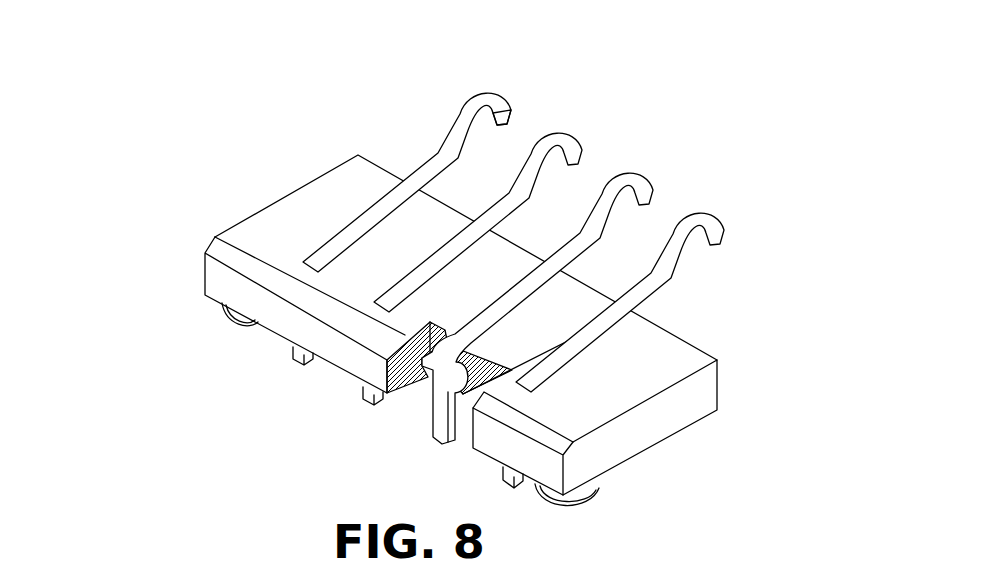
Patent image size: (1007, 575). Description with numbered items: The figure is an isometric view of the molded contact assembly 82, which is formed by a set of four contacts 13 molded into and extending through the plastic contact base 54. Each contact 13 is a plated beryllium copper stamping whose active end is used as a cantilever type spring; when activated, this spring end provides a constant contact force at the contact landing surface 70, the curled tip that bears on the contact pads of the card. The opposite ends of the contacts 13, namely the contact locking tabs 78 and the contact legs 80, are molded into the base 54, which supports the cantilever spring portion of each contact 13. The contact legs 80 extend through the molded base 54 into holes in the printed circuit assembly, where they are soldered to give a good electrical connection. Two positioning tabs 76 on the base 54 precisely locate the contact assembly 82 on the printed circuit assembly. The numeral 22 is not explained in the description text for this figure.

The contact assembly 82 is at (270, 178).
The contact 13 is at (490, 141).
The contact landing surface 70 is at (483, 96).
The contact 22 is at (723, 237).
The positioning tab 76 is at (224, 307).
The contact leg 80 is at (297, 358).
The contact locking tab 78 is at (432, 392).
The contact base 54 is at (652, 427).